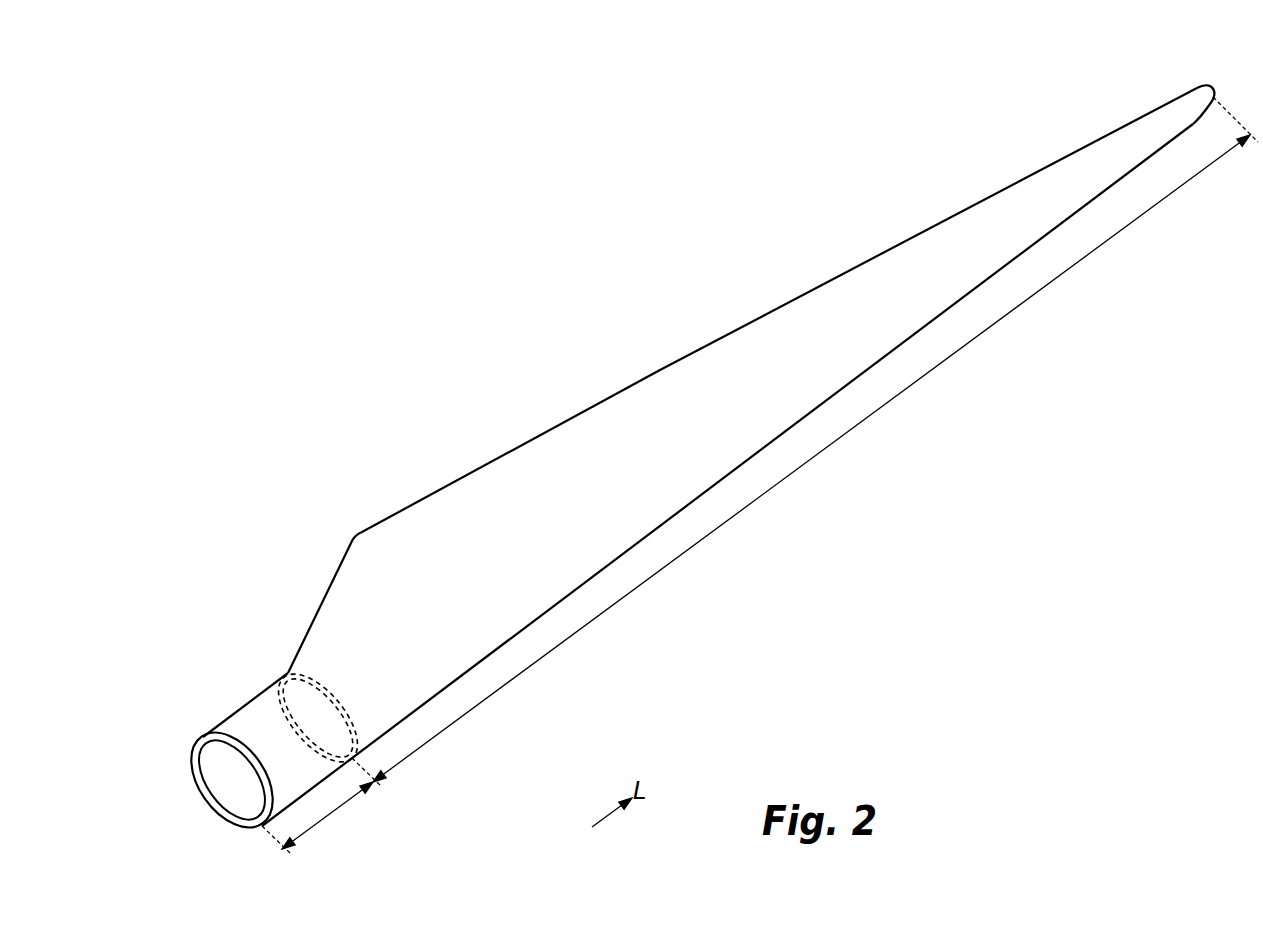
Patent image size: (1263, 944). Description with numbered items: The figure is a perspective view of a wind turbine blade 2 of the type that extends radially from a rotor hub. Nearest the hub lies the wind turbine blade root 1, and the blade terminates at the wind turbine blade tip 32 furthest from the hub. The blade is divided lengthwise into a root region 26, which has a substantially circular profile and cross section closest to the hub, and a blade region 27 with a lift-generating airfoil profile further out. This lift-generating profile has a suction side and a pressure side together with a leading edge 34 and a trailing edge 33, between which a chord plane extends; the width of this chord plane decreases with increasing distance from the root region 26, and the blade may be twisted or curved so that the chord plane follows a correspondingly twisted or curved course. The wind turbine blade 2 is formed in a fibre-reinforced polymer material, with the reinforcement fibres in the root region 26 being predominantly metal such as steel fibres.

The wind turbine blade root 1 is at (250, 718).
The wind turbine blade 2 is at (695, 453).
The root region 26 is at (327, 815).
The blade region 27 is at (790, 475).
The wind turbine blade tip 32 is at (1175, 115).
The trailing edge 33 is at (706, 345).
The leading edge 34 is at (702, 497).